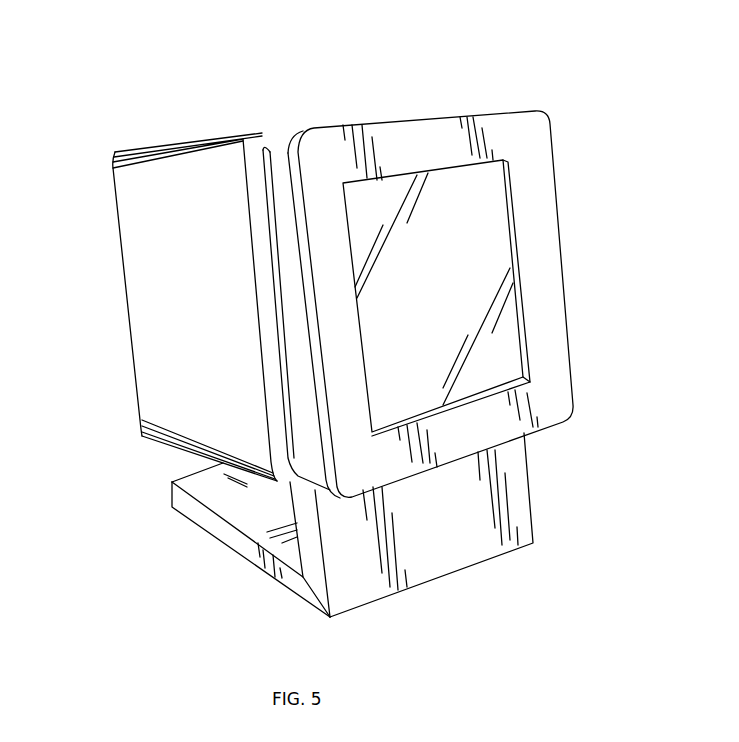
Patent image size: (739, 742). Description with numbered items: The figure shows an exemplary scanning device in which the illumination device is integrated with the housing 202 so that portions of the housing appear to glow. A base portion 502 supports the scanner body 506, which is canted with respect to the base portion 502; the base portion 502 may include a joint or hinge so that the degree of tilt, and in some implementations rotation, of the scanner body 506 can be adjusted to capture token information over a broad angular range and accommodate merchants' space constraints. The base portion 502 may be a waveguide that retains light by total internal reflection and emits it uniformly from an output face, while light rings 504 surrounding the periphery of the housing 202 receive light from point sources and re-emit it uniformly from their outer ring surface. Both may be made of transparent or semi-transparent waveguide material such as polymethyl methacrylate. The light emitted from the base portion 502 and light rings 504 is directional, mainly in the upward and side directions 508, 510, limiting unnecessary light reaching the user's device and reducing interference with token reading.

The housing 202 is at (172, 172).
The base portion 502 is at (240, 543).
The light ring 504 is at (262, 163).
The scanner body 506 is at (102, 156).
The upward direction 508 is at (387, 100).
The side direction 510 is at (192, 553).